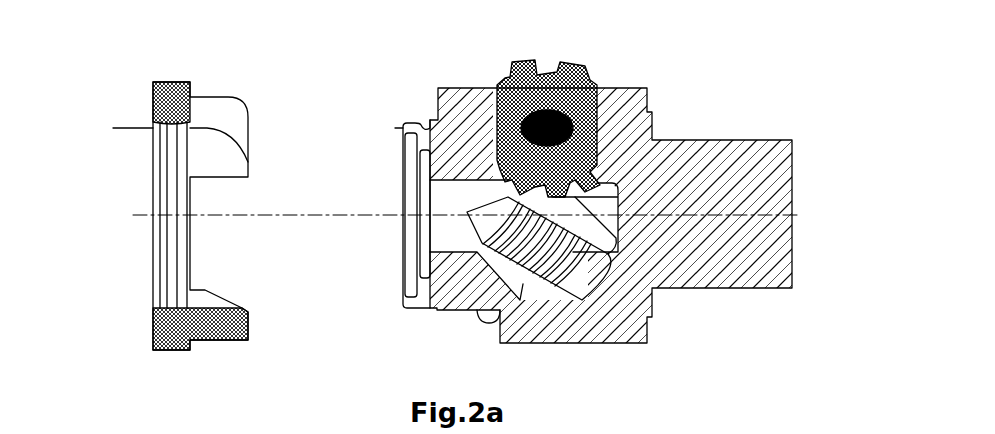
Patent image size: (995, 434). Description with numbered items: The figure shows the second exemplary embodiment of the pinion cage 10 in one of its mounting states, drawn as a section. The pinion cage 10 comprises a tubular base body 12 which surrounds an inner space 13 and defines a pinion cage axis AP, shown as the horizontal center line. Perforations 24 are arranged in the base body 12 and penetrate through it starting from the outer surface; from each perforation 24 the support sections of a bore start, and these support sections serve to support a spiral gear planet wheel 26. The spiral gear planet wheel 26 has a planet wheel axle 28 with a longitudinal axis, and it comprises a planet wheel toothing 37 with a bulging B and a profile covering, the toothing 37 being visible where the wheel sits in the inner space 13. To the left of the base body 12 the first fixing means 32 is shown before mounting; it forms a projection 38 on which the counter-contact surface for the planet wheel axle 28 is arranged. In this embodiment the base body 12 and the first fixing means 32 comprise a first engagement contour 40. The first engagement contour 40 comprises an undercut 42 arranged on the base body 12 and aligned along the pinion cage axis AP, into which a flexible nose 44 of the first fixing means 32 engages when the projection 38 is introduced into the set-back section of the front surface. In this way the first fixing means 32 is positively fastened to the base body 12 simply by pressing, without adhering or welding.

The pinion cage 10 is at (692, 157).
The tubular base body 12 is at (632, 191).
The inner space 13 is at (559, 295).
The perforation 24 is at (522, 98).
The spiral gear planet wheel 26 is at (525, 98).
The planet wheel axle 28 is at (549, 125).
The first fixing means 32 is at (147, 195).
The planet wheel toothing 37 is at (622, 295).
The projection 38 is at (223, 113).
The first engagement contour 40 is at (386, 175).
The undercut 42 is at (425, 120).
The flexible nose 44 is at (187, 123).
The pinion cage axis AP is at (293, 213).
The bulging B is at (580, 257).